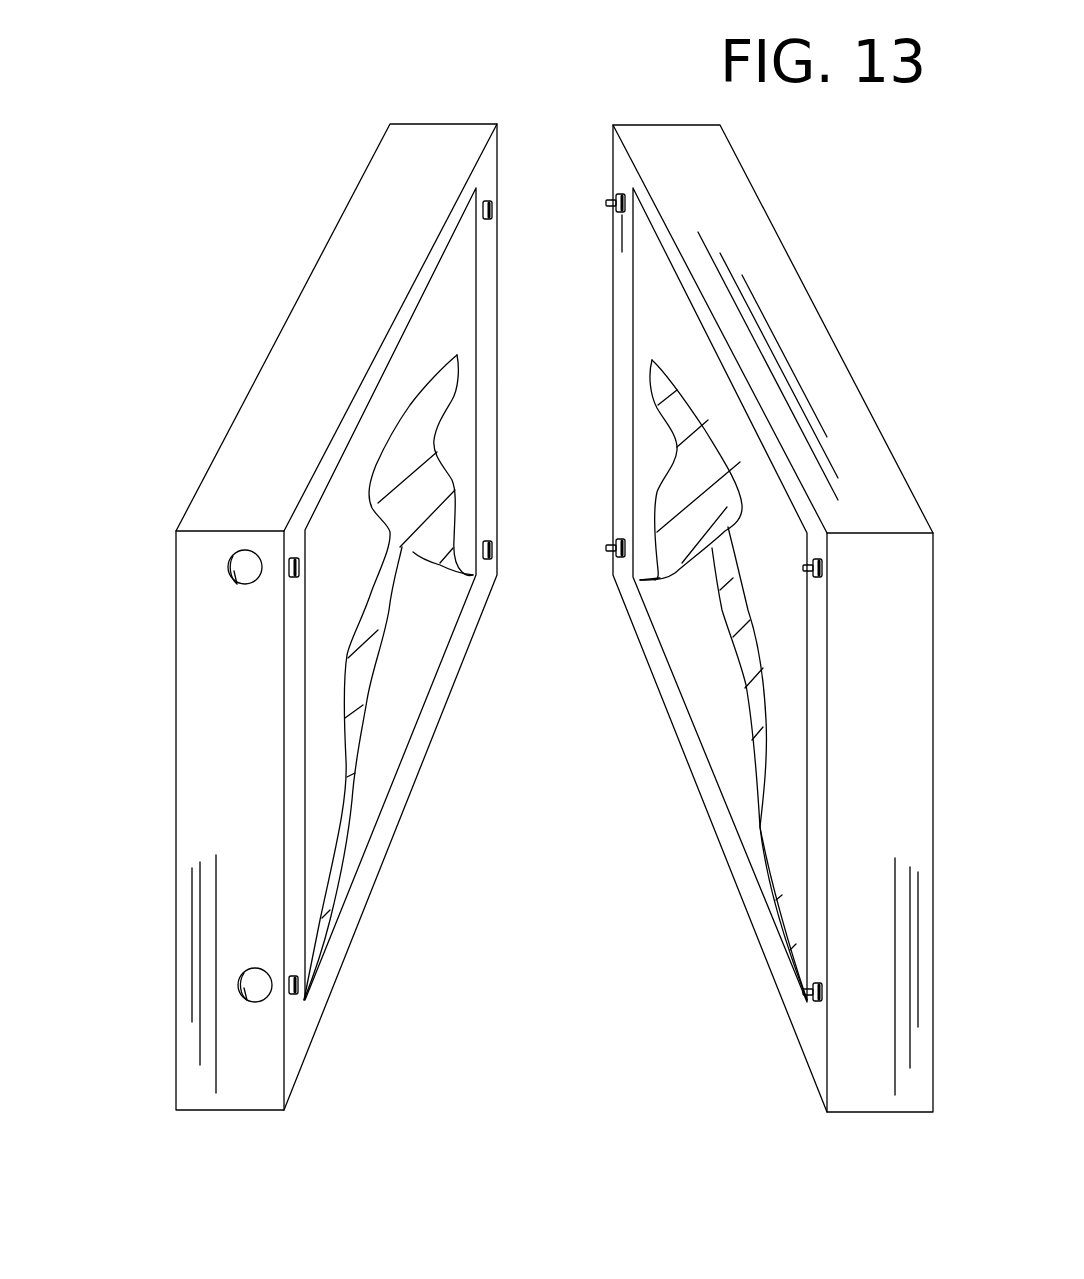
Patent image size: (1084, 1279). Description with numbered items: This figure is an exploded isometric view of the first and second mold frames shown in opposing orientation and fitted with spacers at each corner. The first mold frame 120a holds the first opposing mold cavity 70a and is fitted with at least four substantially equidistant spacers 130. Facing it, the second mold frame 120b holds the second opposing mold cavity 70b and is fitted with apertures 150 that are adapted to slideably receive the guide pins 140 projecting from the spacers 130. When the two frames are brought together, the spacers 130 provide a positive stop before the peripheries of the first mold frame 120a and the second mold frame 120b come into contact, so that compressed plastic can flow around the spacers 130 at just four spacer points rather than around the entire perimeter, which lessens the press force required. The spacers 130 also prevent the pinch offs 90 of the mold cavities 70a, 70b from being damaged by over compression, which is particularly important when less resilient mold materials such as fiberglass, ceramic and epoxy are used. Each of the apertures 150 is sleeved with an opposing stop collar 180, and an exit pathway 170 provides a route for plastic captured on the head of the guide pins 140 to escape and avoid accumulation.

The first mold frame 120a is at (452, 177).
The second mold frame 120b is at (708, 169).
The first opposing mold cavity 70a is at (468, 345).
The second opposing mold cavity 70b is at (688, 335).
The apertures 150 is at (493, 210).
The guide pins 140 is at (608, 211).
The spacers 130 is at (621, 250).
The pinch offs 90 is at (388, 530).
The exit pathway 170 is at (227, 572).
The stop collar 180 is at (294, 578).